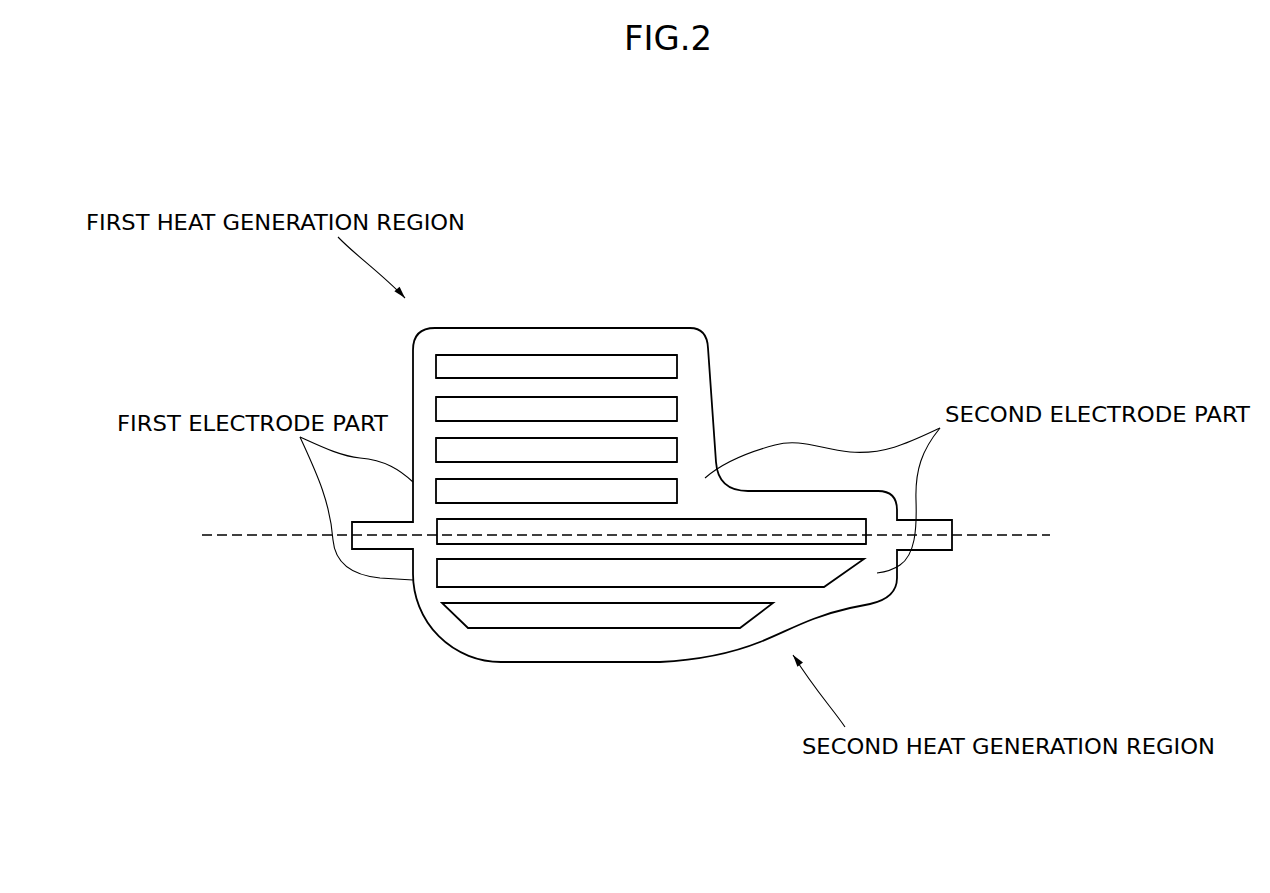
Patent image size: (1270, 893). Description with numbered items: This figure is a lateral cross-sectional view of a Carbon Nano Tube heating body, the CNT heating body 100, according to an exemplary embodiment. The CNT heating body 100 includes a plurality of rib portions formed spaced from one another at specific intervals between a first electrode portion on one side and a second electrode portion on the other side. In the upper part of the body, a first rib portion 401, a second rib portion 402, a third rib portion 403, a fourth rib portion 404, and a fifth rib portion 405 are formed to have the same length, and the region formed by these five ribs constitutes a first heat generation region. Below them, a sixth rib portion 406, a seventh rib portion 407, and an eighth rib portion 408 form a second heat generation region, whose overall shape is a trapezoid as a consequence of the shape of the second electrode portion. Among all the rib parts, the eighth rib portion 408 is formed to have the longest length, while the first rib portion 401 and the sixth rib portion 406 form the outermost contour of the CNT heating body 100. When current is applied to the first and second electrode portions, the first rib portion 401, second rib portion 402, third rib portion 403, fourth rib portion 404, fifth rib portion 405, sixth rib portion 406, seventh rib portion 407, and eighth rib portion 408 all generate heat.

The CNT heating body 100 is at (255, 159).
The first rib portion 401 is at (503, 338).
The second rib portion 402 is at (533, 385).
The third rib portion 403 is at (592, 428).
The fourth rib portion 404 is at (622, 473).
The fifth rib portion 405 is at (633, 510).
The sixth rib portion 406 is at (645, 647).
The seventh rib portion 407 is at (572, 597).
The eighth rib portion 408 is at (495, 553).